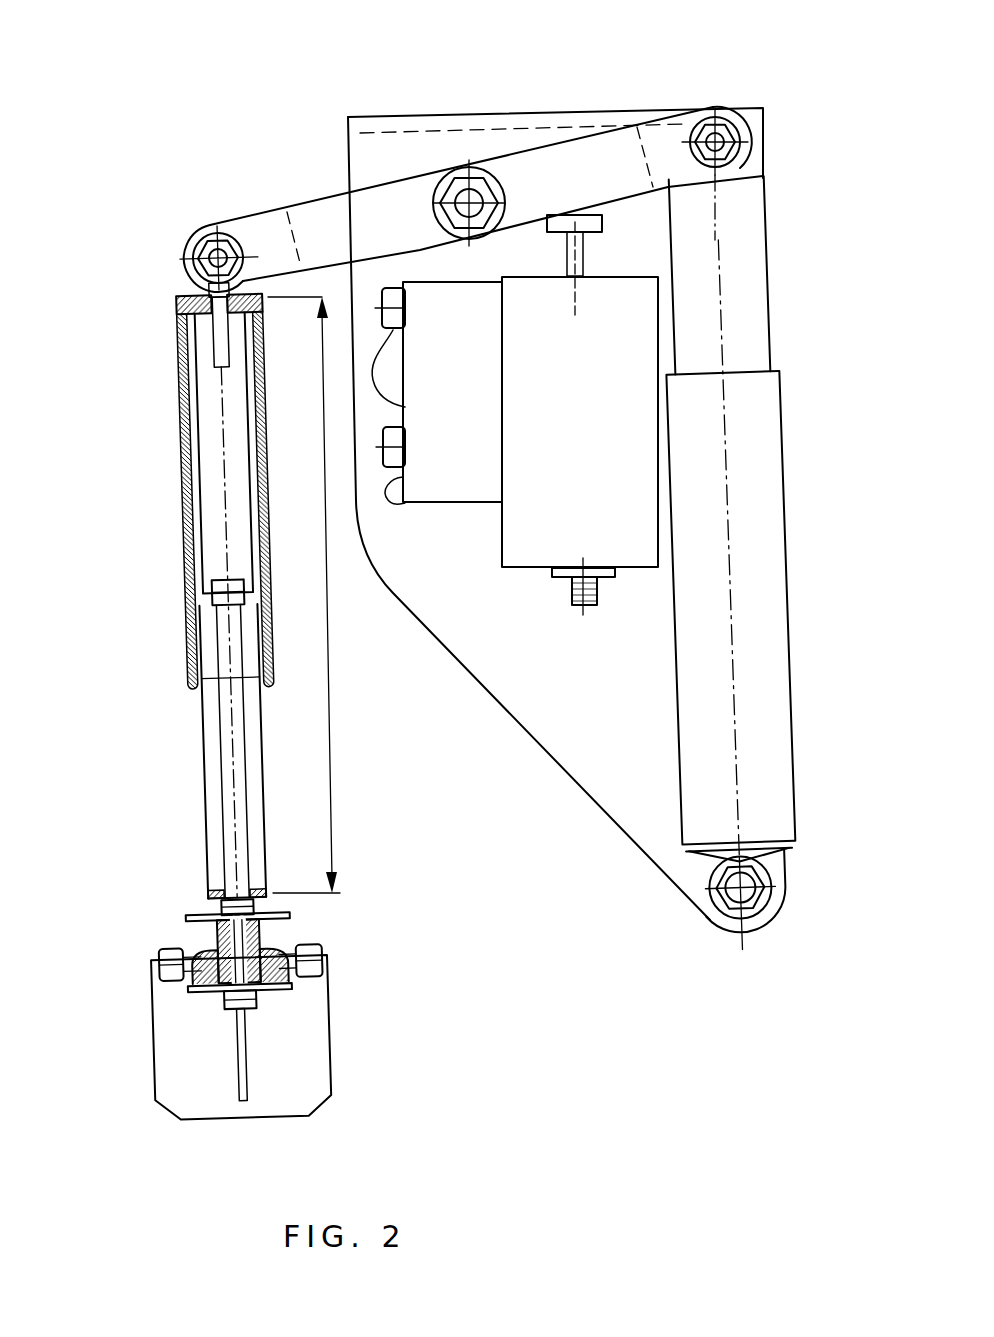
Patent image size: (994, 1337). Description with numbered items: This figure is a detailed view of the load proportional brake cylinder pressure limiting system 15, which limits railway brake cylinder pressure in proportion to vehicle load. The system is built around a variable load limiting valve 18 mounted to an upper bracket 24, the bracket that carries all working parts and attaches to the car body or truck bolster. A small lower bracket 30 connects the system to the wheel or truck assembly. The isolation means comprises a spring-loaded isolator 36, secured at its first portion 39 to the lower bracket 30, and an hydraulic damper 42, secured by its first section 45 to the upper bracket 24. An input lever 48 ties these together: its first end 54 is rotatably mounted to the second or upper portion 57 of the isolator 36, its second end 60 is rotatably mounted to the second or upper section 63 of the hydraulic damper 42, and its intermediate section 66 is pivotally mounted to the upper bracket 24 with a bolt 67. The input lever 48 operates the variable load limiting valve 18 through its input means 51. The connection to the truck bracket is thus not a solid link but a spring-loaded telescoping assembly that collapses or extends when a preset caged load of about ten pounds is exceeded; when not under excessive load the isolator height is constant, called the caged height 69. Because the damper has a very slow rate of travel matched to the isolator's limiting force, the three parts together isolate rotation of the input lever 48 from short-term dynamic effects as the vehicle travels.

The load proportional brake cylinder pressure limiting system 15 is at (708, 1064).
The variable load limiting valve 18 is at (590, 440).
The upper bracket 24 is at (652, 873).
The lower bracket 30 is at (348, 1066).
The spring-loaded isolator 36 is at (172, 563).
The first portion of the isolator 39 is at (205, 893).
The hydraulic damper 42 is at (772, 457).
The first section of the hydraulic damper 45 is at (785, 815).
The input lever 48 is at (326, 191).
The input means 51 is at (596, 196).
The first end of the input lever 54 is at (258, 215).
The second portion of the isolator 57 is at (176, 352).
The second end of the input lever 60 is at (687, 108).
The second section of the hydraulic damper 63 is at (760, 208).
The intermediate section of the input lever 66 is at (434, 170).
The bolt 67 is at (500, 173).
The caged height 69 is at (330, 742).